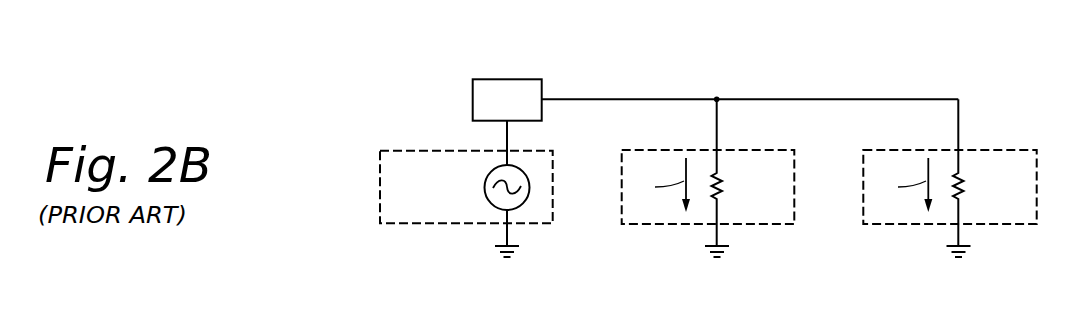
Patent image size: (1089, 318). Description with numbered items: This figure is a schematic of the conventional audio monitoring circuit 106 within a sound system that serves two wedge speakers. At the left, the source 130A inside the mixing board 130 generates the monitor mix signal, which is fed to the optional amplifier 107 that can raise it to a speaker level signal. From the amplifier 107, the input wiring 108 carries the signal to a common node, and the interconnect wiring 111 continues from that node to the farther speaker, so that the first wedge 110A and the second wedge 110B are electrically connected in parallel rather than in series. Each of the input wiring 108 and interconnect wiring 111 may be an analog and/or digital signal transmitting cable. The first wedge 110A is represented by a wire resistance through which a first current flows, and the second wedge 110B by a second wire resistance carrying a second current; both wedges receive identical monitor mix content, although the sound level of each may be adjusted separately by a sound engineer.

The audio monitoring circuit 106 is at (355, 79).
The amplifier 107 is at (528, 111).
The input wiring 108 is at (593, 97).
The interconnect wiring 111 is at (832, 97).
The mixing board 130 is at (413, 225).
The source 130A is at (485, 183).
The first wedge 110A is at (638, 226).
The second wedge 110B is at (882, 226).